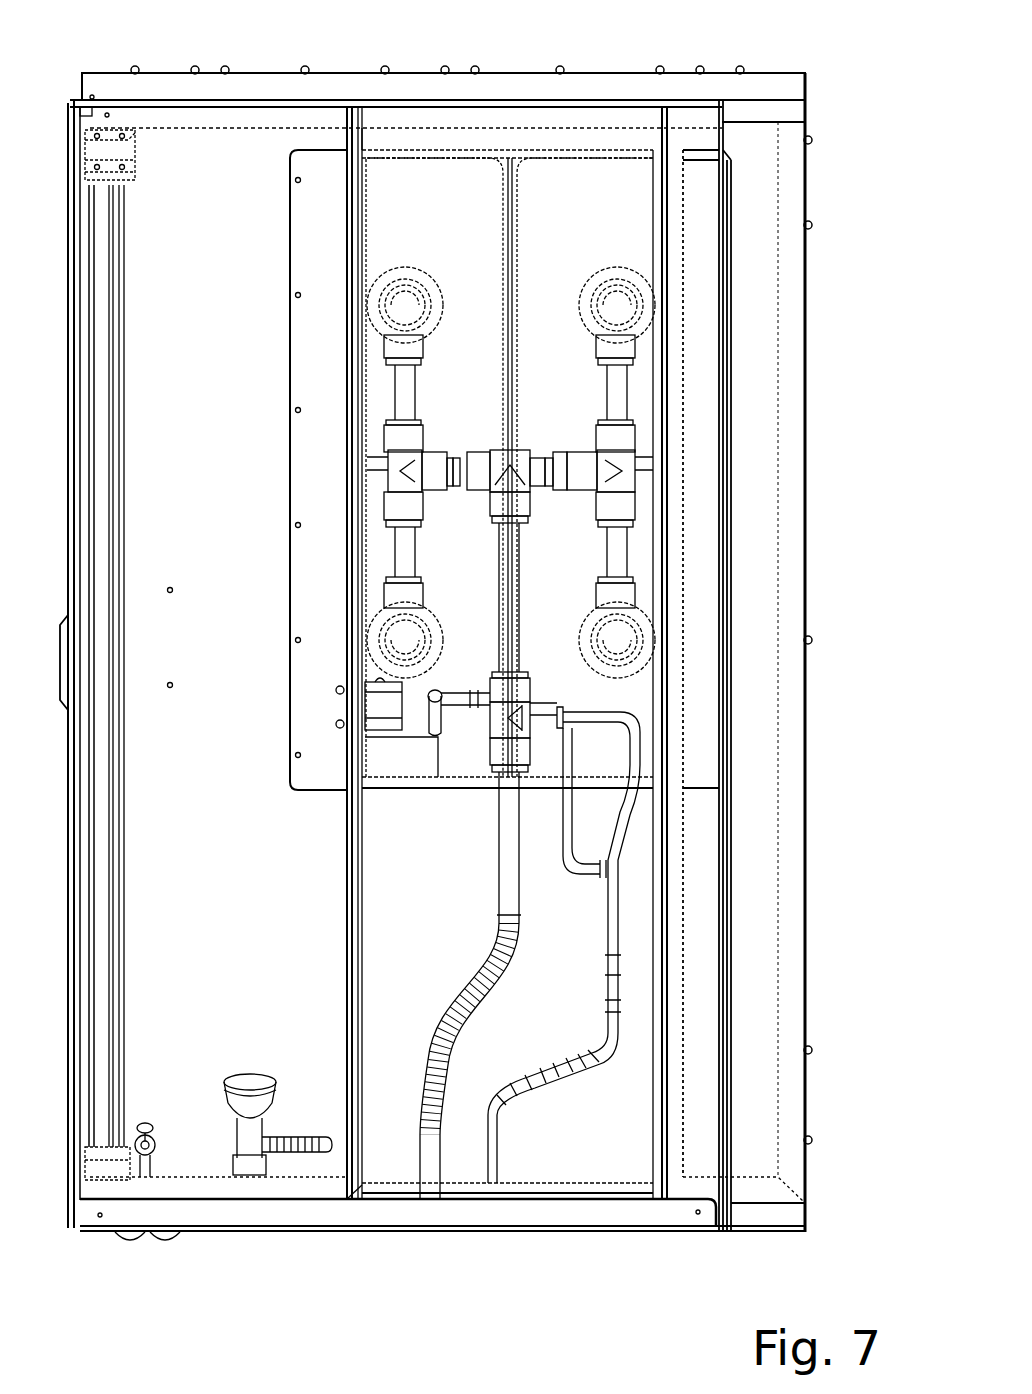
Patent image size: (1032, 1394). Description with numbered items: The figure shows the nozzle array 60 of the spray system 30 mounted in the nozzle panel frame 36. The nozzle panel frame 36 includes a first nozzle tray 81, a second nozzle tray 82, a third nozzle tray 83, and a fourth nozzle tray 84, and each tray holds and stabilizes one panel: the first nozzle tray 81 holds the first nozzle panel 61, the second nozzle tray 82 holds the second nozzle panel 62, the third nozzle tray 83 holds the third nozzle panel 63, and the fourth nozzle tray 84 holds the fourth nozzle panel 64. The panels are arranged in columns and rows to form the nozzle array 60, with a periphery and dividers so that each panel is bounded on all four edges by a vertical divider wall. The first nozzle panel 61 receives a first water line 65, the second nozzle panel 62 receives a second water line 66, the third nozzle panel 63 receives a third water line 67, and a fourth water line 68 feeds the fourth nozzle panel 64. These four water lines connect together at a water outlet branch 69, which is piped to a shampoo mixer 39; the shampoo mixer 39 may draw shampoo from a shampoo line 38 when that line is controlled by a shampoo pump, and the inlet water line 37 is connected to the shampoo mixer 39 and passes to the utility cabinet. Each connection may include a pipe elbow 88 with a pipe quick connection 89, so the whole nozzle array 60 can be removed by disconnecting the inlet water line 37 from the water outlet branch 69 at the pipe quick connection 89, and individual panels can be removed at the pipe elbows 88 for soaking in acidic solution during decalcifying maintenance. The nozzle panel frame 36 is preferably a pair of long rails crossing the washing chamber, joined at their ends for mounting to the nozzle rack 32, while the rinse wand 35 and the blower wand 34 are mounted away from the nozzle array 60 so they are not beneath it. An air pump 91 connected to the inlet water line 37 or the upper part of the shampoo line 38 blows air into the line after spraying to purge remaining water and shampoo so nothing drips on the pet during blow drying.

The spray system 30 is at (765, 196).
The nozzle rack 32 is at (690, 1222).
The blower wand 34 is at (250, 1158).
The rinse wand 35 is at (130, 1177).
The nozzle panel frame 36 is at (680, 855).
The inlet water line 37 is at (445, 1195).
The shampoo line 38 is at (590, 1050).
The shampoo mixer 39 is at (500, 728).
The nozzle array 60 is at (590, 140).
The first nozzle panel 61 is at (423, 178).
The second nozzle panel 62 is at (640, 188).
The third nozzle panel 63 is at (365, 660).
The fourth nozzle panel 64 is at (650, 695).
The first water line 65 is at (397, 395).
The second water line 66 is at (612, 393).
The third water line 67 is at (400, 550).
The fourth water line 68 is at (612, 555).
The water outlet branch 69 is at (495, 455).
The first nozzle tray 81 is at (385, 140).
The second nozzle tray 82 is at (623, 155).
The third nozzle tray 83 is at (385, 785).
The fourth nozzle tray 84 is at (580, 792).
The pipe elbow 88 is at (395, 300).
The pipe quick connection 89 is at (403, 347).
The air pump 91 is at (390, 752).